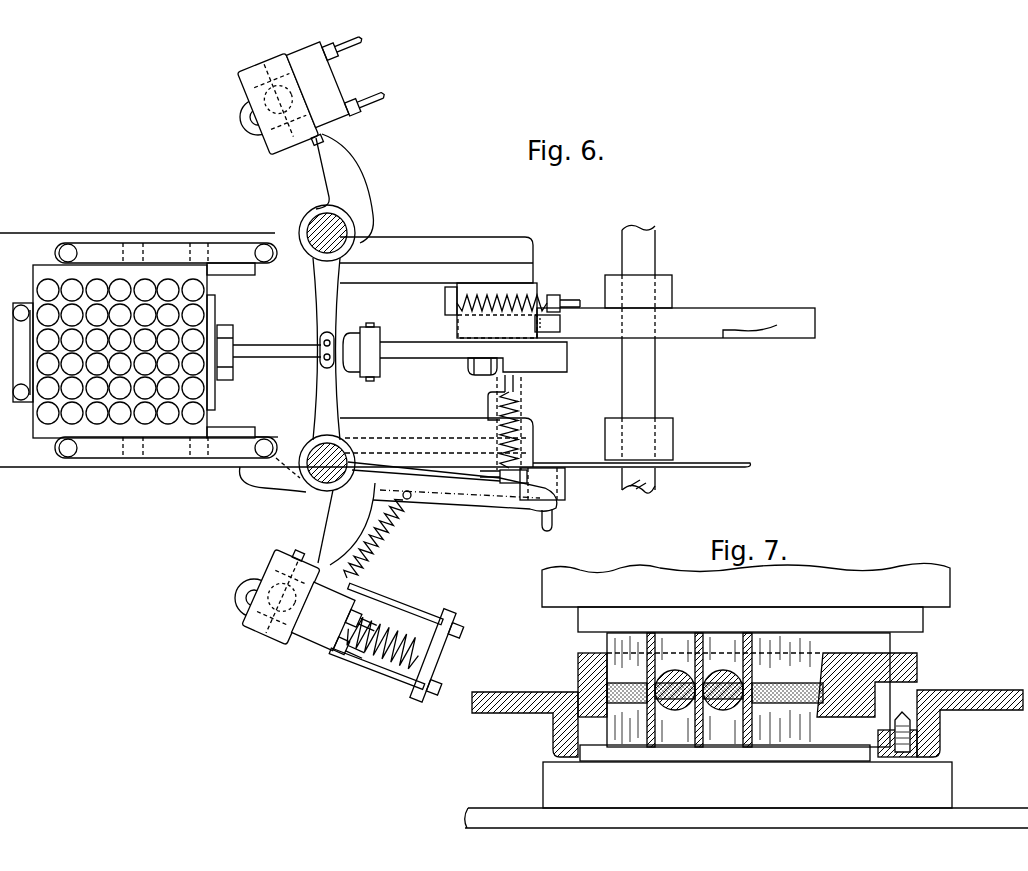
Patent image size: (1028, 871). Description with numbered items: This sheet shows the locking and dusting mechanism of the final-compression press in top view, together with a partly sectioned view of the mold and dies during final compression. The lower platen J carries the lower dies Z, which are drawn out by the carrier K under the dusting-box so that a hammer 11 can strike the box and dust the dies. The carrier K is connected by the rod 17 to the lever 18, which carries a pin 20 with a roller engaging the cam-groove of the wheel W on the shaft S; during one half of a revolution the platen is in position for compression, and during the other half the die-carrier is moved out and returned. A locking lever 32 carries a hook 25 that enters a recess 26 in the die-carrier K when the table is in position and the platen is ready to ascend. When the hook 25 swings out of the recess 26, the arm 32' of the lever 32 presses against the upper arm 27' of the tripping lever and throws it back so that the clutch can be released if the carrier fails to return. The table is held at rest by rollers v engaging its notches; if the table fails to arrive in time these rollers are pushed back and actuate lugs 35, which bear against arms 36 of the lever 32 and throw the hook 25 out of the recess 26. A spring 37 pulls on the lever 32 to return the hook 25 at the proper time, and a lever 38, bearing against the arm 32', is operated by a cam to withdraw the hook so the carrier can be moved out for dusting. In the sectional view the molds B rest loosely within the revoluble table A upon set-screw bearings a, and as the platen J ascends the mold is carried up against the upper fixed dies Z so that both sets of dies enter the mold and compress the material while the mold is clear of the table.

In FIG. 6, the hammer 11 is at (562, 326).
In FIG. 6, the rod 17 is at (265, 357).
In FIG. 6, the lever 18 is at (432, 359).
In FIG. 6, the pin 20 is at (485, 377).
In FIG. 6, the hook 25 is at (250, 431).
In FIG. 6, the recess 26 is at (240, 455).
In FIG. 6, the upper arm 27' is at (529, 437).
In FIG. 6, the lever 32 is at (308, 364).
In FIG. 6, the arm 32' is at (452, 502).
In FIG. 6, the lugs 35 is at (305, 152).
In FIG. 6, the arms 36 is at (350, 186).
In FIG. 6, the spring 37 is at (388, 556).
In FIG. 6, the lever 38 is at (553, 526).
In FIG. 6, the shaft S is at (643, 253).
In FIG. 6, the rollers v is at (238, 111).
In FIG. 6, the wheel W is at (385, 652).
In FIG. 6, the dies Z is at (43, 413).
In FIG. 7, the dies Z is at (625, 650).
In FIG. 6, the lower platen J is at (47, 453).
In FIG. 7, the lower platen J is at (538, 820).
In FIG. 7, the carrier K is at (747, 785).
In FIG. 7, the revoluble table A is at (985, 692).
In FIG. 7, the molds B is at (880, 668).
In FIG. 7, the set-screws a is at (903, 758).